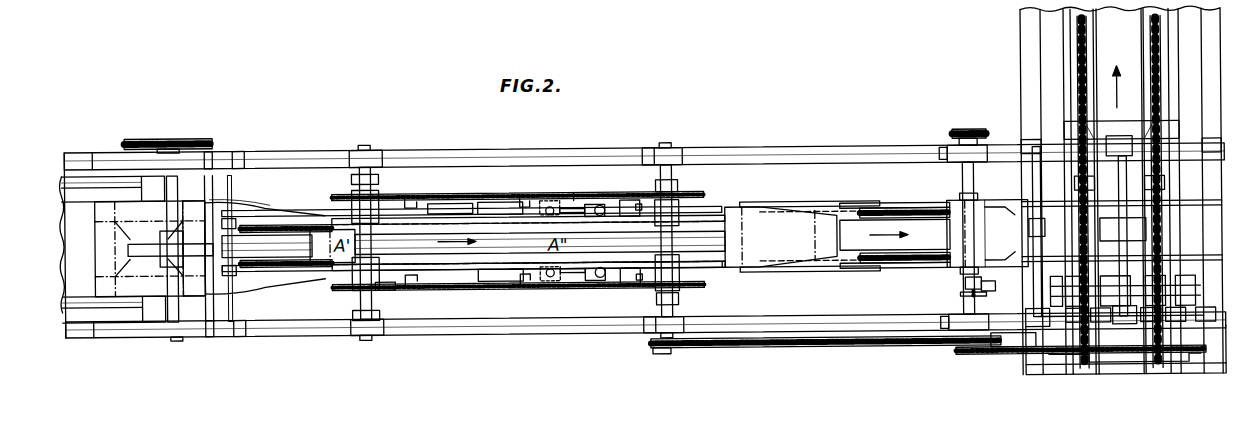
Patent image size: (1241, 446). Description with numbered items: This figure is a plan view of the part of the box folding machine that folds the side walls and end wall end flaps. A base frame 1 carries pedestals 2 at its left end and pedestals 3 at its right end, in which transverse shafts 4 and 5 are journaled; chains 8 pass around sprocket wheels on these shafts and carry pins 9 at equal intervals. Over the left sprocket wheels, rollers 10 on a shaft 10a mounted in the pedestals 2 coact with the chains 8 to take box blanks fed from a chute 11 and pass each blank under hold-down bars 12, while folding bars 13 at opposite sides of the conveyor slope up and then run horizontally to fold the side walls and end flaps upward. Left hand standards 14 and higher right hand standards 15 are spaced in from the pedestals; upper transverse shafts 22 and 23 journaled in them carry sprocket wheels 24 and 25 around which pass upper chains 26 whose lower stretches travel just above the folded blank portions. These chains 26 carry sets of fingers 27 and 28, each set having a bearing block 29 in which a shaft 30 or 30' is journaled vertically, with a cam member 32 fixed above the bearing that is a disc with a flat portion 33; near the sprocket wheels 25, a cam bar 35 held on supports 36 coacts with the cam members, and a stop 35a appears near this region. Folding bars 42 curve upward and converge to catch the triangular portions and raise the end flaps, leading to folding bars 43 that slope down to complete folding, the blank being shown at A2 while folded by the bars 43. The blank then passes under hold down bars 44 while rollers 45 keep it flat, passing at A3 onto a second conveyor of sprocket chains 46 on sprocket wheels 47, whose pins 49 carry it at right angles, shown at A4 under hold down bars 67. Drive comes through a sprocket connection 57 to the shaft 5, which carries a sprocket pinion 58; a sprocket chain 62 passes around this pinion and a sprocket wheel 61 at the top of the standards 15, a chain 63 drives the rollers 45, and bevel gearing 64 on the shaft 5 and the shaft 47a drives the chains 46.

The base frame 1 is at (460, 150).
The pedestals 2 is at (104, 144).
The pedestals 3 is at (946, 148).
The transverse shaft 4 is at (175, 134).
The transverse shaft 5 is at (952, 180).
The chains 8 is at (284, 254).
The pins 9 is at (302, 203).
The rollers 10 is at (144, 242).
The shaft 10a is at (174, 182).
The chute 11 is at (132, 249).
The hold-down bars 12 is at (258, 188).
The folding bars 13 is at (288, 202).
The left hand standards 14 is at (356, 148).
The right hand standards 15 is at (682, 154).
The upper transverse shaft 22 is at (386, 304).
The upper transverse shaft 23 is at (655, 308).
The sprocket wheels 24 is at (334, 192).
The sprocket wheels 25 is at (686, 190).
The upper chains 26 is at (494, 196).
The finger 27 is at (524, 196).
The finger 28 is at (420, 197).
The bearing block 29 is at (423, 200).
The shaft 30 is at (606, 290).
The shaft 30' is at (630, 288).
The cam member 32 is at (600, 204).
The flat portion 33 is at (586, 284).
The cam bar 35 is at (570, 240).
The guide stop 35a is at (570, 182).
The supports 36 is at (558, 216).
The folding bars 42 is at (648, 186).
The folding bars 43 is at (798, 198).
The hold down bars 44 is at (906, 206).
The rollers 45 is at (1013, 238).
The sprocket chains 46 is at (1078, 84).
The sprocket wheels 47 is at (1090, 274).
The shaft 47a is at (1052, 292).
The pins 49 is at (1078, 184).
The sprocket connection 57 is at (958, 130).
The sprocket pinion 58 is at (1010, 352).
The sprocket wheel 61 is at (656, 354).
The sprocket chain 62 is at (793, 346).
The chain 63 is at (1078, 368).
The bevel gearing 64 is at (964, 292).
The hold down bars 67 is at (1140, 52).
The blank A2 is at (774, 208).
The blank A3 is at (996, 206).
The blank A4 is at (1156, 128).